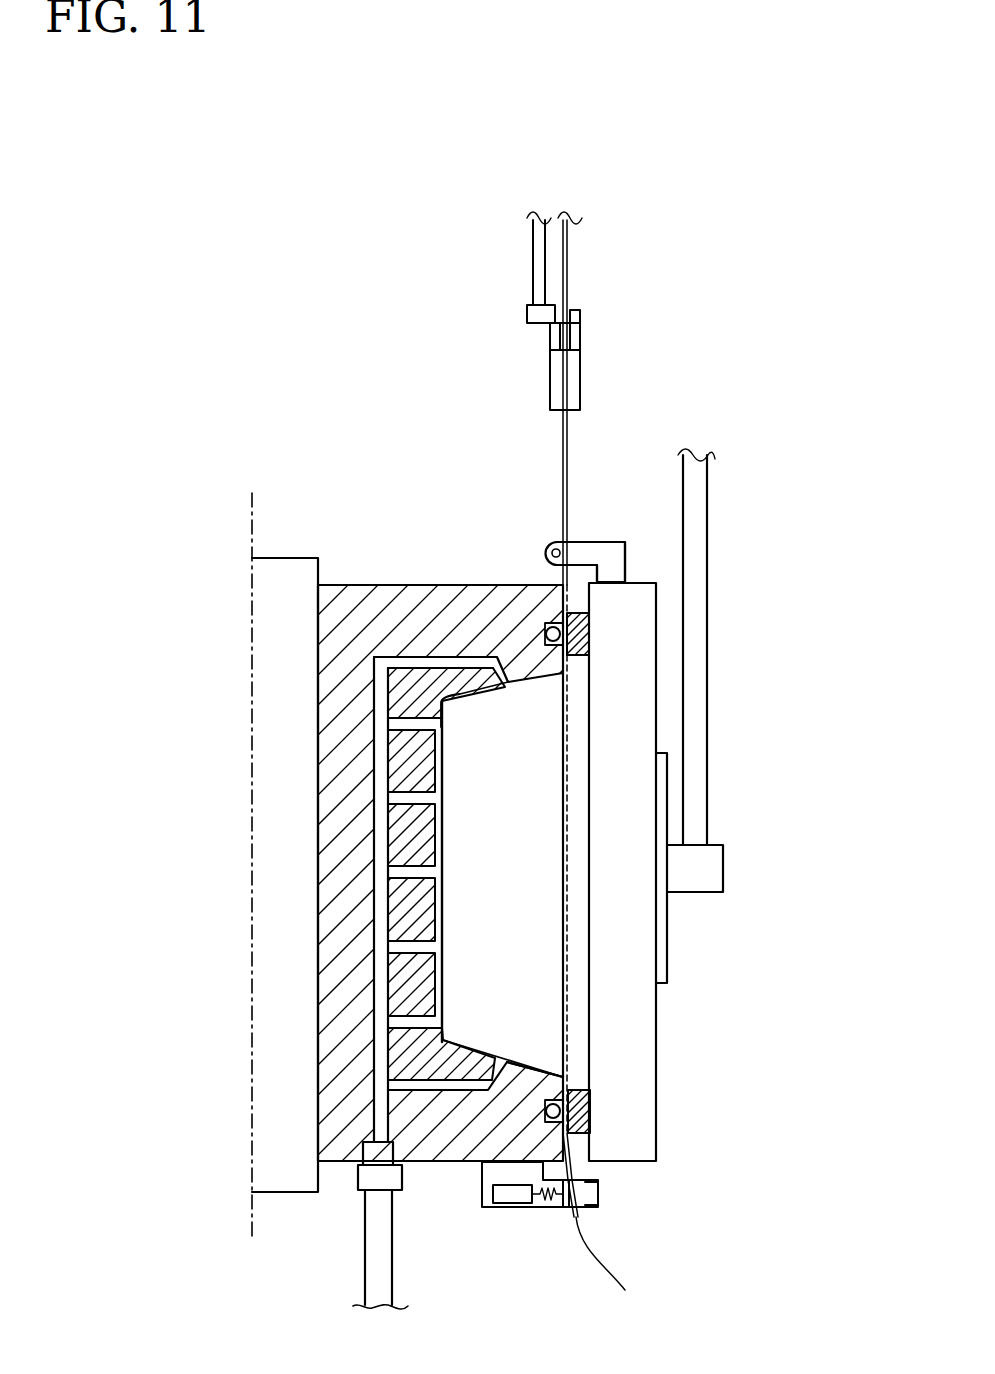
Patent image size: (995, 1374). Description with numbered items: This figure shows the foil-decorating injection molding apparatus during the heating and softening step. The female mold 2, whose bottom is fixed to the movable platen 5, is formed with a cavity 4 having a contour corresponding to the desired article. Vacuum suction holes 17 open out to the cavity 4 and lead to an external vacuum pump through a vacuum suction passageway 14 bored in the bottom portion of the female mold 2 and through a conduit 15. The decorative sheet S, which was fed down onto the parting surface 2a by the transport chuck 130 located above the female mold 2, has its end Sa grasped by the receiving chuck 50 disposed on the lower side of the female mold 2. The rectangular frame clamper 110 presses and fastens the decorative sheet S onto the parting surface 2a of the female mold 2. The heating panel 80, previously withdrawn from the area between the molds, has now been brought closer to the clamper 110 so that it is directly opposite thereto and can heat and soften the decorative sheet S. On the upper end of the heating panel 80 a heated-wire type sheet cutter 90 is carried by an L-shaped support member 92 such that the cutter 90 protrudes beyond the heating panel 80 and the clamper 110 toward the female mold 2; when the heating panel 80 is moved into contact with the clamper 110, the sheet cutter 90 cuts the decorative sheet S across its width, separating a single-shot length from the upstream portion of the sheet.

The female mold 2 is at (386, 572).
The parting surface 2a is at (565, 1077).
The cavity 4 is at (459, 840).
The movable platen 5 is at (287, 575).
The vacuum suction passageway 14 is at (372, 902).
The conduit 15 is at (372, 1248).
The vacuum suction holes 17 is at (441, 727).
The receiving chuck 50 is at (525, 1222).
The heating panel 80 is at (672, 1012).
The sheet cutter 90 is at (548, 552).
The L-shaped support member 92 is at (585, 553).
The clamper 110 is at (589, 622).
The transport chuck 130 is at (600, 349).
The decorative sheet S is at (570, 720).
The end of the decorative sheet Sa is at (614, 1277).